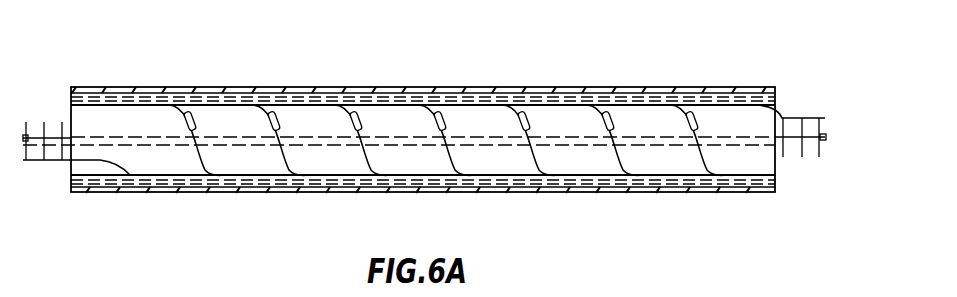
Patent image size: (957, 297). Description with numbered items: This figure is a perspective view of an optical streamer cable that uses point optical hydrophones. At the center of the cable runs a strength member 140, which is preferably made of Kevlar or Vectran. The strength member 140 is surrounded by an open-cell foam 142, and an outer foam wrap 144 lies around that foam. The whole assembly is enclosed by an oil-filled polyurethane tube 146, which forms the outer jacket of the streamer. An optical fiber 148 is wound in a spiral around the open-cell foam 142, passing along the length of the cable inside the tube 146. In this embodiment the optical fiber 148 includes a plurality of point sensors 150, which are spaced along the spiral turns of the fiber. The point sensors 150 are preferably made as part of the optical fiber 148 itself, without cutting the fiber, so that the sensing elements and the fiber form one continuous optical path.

The strength member 140 is at (664, 148).
The open-cell foam 142 is at (493, 117).
The outer foam wrap 144 is at (309, 86).
The oil-filled polyurethane tube 146 is at (150, 86).
The optical fiber 148 is at (369, 157).
The point sensors 150 is at (702, 117).